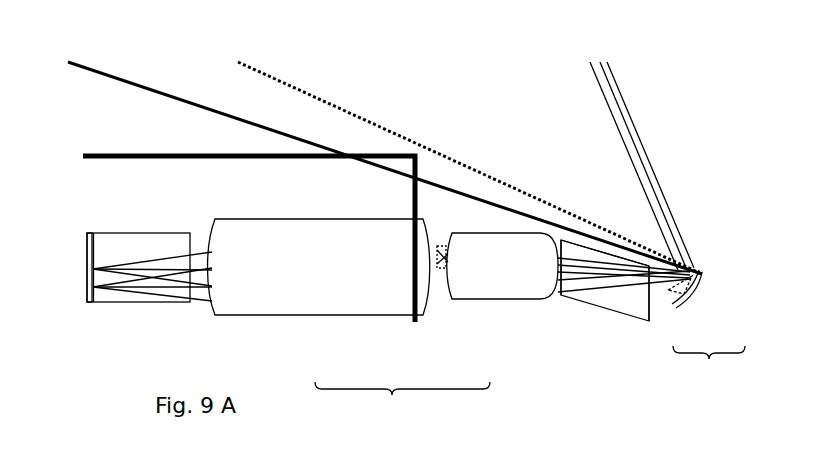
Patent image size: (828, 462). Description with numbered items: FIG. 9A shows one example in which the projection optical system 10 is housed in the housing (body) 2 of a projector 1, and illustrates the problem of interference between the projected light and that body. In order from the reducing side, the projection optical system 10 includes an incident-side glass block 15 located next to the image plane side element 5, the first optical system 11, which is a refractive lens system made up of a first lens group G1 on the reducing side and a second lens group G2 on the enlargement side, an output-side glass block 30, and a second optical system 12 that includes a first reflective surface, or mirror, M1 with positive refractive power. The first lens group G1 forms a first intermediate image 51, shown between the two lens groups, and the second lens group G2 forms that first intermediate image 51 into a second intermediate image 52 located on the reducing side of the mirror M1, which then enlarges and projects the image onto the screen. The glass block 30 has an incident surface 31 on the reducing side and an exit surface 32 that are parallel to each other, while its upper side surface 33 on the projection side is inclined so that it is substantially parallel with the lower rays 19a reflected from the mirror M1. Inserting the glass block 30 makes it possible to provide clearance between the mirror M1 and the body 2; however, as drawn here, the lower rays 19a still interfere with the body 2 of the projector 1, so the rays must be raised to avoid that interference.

The projector 1 is at (668, 164).
The housing 2 is at (153, 155).
The image display element 5 is at (86, 280).
The projection optical system 10 is at (594, 382).
The first optical system 11 is at (402, 400).
The second optical system 12 is at (709, 365).
The incident-side glass block 15 is at (137, 298).
The lower rays 19a is at (170, 96).
The output-side glass block 30 is at (620, 306).
The incident surface 31 is at (559, 298).
The exit surface 32 is at (654, 320).
The upper surface 33 is at (582, 240).
The first intermediate image 51 is at (441, 248).
The second intermediate image 52 is at (692, 285).
The first lens group G1 is at (357, 295).
The second lens group G2 is at (500, 297).
The first reflective surface M1 is at (688, 305).